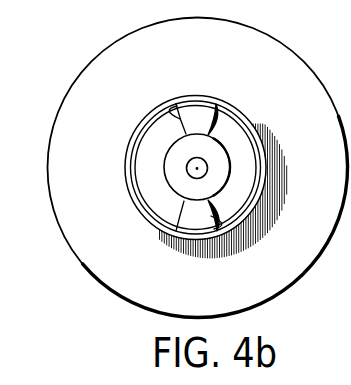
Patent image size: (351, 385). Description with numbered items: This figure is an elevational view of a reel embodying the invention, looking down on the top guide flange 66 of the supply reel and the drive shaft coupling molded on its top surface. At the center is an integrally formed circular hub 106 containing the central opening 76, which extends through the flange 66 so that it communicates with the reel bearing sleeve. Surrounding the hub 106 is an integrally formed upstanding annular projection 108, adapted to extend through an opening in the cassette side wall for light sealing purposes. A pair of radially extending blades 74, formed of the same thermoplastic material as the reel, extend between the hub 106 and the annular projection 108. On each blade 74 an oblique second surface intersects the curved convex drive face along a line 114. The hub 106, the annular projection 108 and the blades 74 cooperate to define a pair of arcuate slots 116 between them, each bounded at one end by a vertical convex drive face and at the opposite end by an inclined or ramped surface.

The top guide flange 66 is at (97, 236).
The annular projection 108 is at (241, 113).
The circular hub 106 is at (171, 157).
The central opening 76 is at (206, 160).
The radially extending blades 74 is at (197, 112).
The line 114 is at (176, 105).
The arcuate slots 116 is at (151, 181).